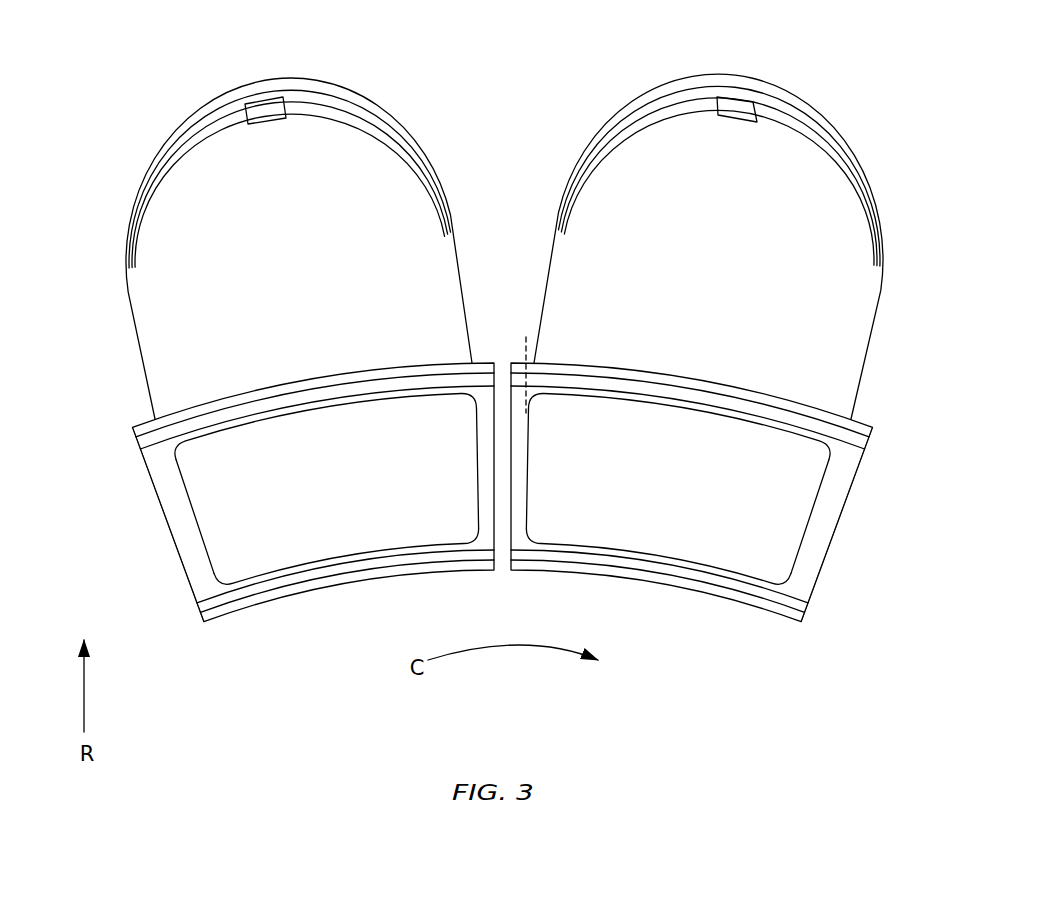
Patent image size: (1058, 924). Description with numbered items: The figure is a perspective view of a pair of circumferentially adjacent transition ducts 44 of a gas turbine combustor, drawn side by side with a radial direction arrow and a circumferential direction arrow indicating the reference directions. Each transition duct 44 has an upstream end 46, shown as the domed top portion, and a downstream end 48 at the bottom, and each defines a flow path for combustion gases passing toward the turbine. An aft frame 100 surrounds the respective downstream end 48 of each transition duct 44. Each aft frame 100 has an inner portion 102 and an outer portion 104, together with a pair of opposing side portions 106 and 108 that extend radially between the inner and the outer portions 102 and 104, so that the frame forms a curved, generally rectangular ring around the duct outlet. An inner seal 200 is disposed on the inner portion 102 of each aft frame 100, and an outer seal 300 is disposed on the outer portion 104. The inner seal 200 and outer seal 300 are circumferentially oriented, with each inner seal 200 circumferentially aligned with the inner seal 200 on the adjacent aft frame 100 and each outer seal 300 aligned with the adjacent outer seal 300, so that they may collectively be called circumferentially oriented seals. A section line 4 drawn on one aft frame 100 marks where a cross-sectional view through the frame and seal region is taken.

The section line 4- 4 is at (526, 338).
The transition duct 44 is at (110, 125).
The upstream end 46 is at (398, 118).
The downstream end 48 is at (120, 397).
The aft frame 100 is at (157, 498).
The inner portion 102 is at (330, 558).
The outer portion 104 is at (352, 407).
The side portion 106 is at (475, 478).
The side portion 108 is at (192, 532).
The inner seal 200 is at (478, 573).
The outer seal 300 is at (390, 383).